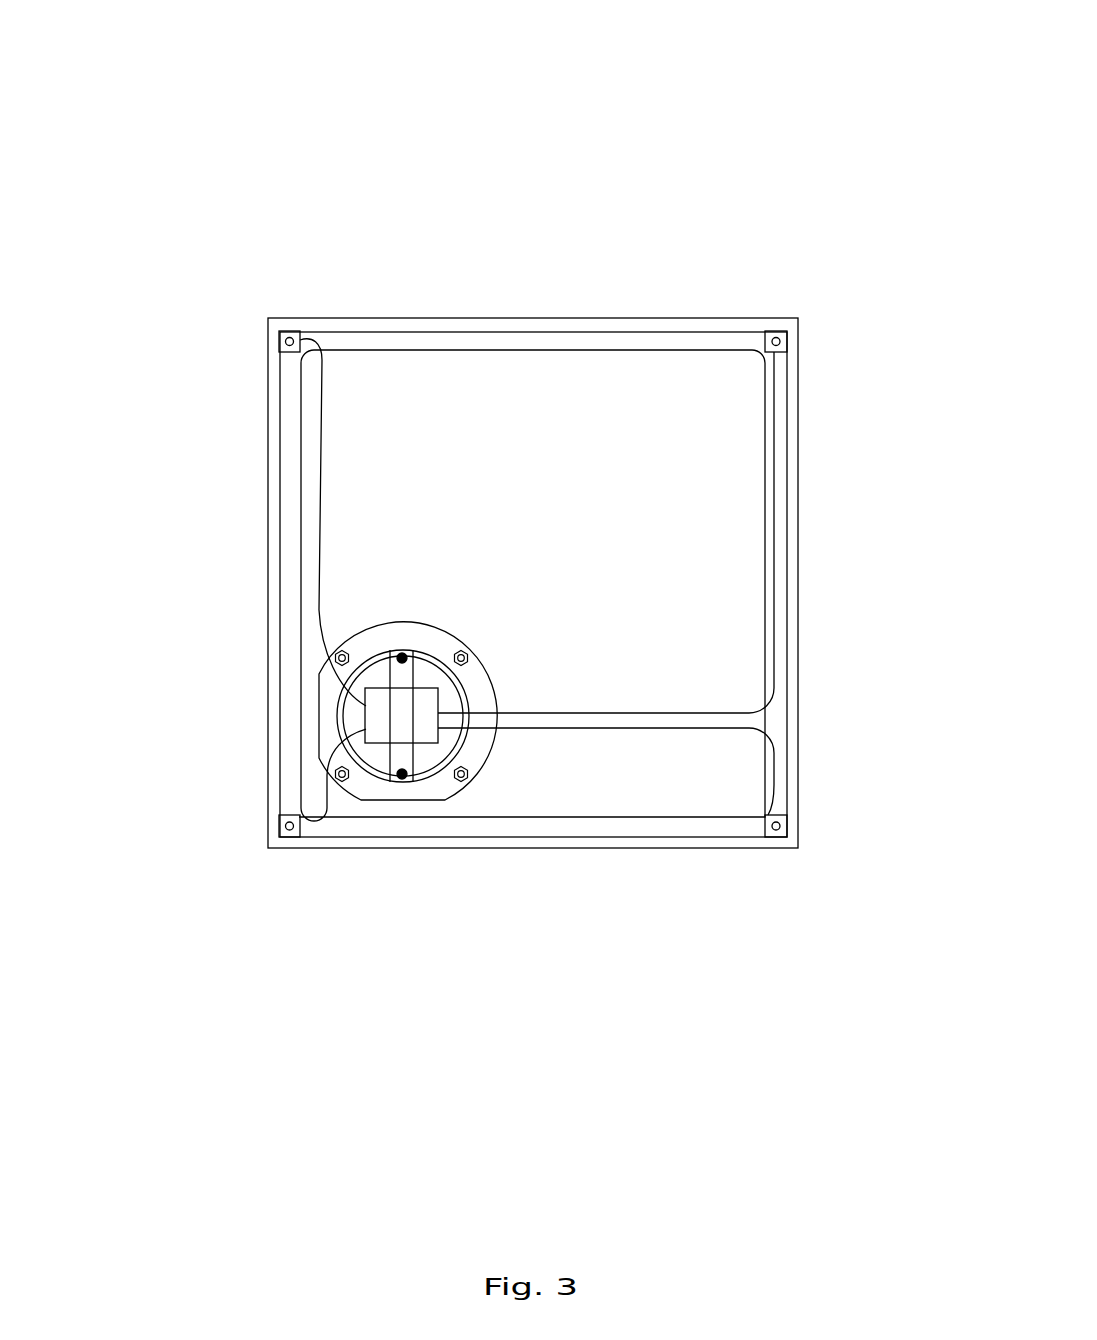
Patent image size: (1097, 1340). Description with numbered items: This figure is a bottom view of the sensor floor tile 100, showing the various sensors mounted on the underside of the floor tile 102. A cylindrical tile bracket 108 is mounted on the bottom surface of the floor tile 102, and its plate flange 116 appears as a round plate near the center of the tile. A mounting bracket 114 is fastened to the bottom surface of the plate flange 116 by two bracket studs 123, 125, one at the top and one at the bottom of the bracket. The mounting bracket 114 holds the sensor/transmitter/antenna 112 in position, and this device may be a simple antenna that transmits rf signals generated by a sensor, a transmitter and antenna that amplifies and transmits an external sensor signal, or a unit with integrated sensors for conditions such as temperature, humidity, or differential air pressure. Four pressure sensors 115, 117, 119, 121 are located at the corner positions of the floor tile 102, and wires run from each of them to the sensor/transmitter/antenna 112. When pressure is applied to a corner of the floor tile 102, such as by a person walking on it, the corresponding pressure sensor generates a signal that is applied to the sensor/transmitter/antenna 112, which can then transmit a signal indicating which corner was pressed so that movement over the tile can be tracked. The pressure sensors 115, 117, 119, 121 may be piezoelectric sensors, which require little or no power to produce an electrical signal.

The sensor floor tile 100 is at (467, 60).
The floor tile 102 is at (462, 318).
The cylindrical tile bracket 108 is at (383, 622).
The sensor/transmitter/antenna 112 is at (607, 653).
The mounting bracket 114 is at (418, 678).
The pressure sensor 115 is at (771, 333).
The plate flange 116 is at (476, 768).
The pressure sensor 117 is at (279, 338).
The pressure sensor 119 is at (281, 825).
The pressure sensor 121 is at (780, 826).
The bracket stud 123 is at (403, 657).
The bracket stud 125 is at (413, 790).